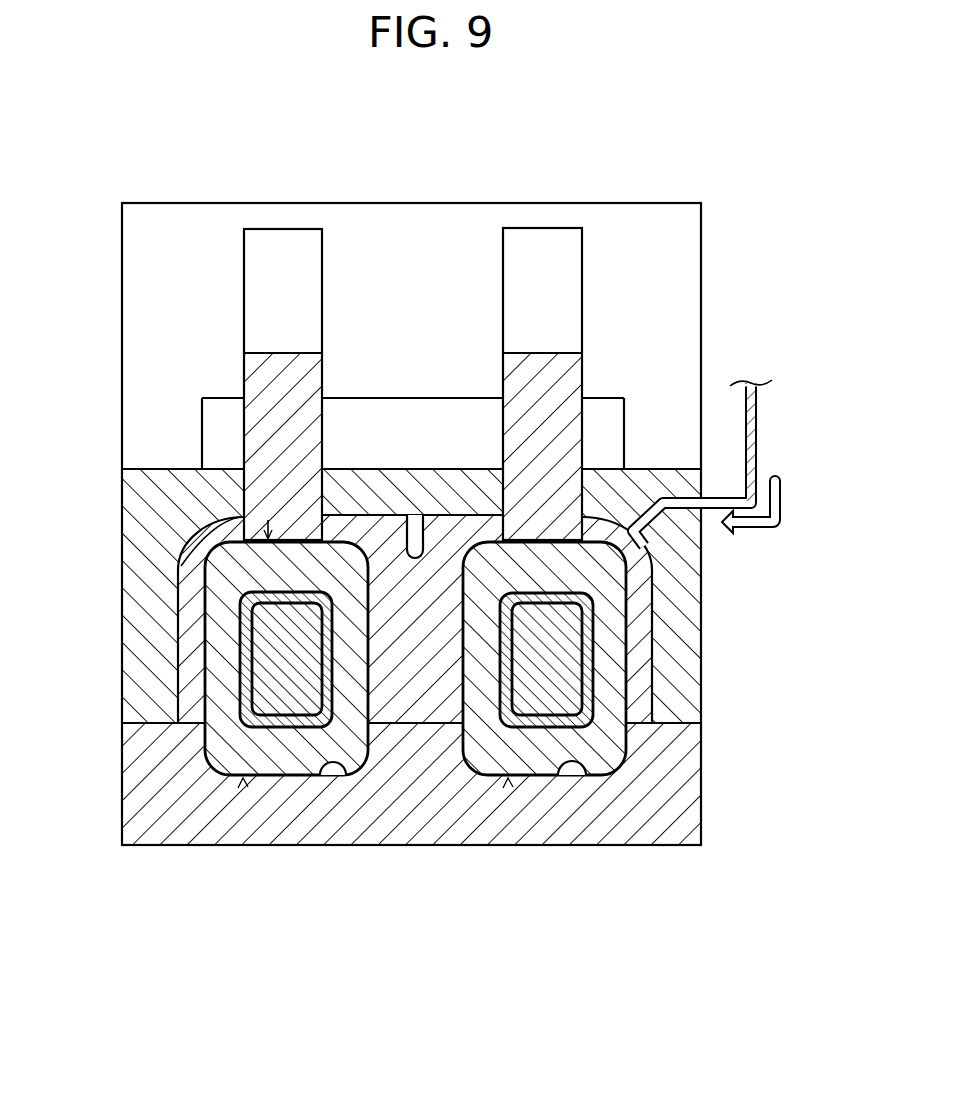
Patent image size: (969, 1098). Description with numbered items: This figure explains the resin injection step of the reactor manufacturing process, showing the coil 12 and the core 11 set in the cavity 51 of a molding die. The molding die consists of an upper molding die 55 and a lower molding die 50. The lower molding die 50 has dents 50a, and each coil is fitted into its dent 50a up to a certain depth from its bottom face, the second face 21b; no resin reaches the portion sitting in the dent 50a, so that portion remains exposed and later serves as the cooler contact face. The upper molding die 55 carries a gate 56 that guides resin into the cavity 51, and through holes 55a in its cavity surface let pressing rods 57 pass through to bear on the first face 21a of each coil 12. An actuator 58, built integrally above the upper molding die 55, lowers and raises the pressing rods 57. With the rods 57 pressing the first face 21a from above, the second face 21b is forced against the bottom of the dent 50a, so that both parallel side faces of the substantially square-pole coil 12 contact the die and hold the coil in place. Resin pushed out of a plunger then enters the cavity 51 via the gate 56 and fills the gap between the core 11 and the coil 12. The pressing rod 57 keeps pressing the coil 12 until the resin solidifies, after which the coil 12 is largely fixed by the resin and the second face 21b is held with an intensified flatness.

The pressing rod 57 is at (282, 370).
The actuator 58 is at (371, 238).
The first face 21a is at (535, 537).
The second face 21b is at (243, 778).
The through hole 55a is at (248, 475).
The upper molding die 55 is at (698, 680).
The gate 56 is at (632, 547).
The coil 12 is at (275, 762).
The core 11 is at (524, 703).
The dent 50a is at (332, 777).
The lower molding die 50 is at (657, 818).
The cavity 51 is at (411, 651).